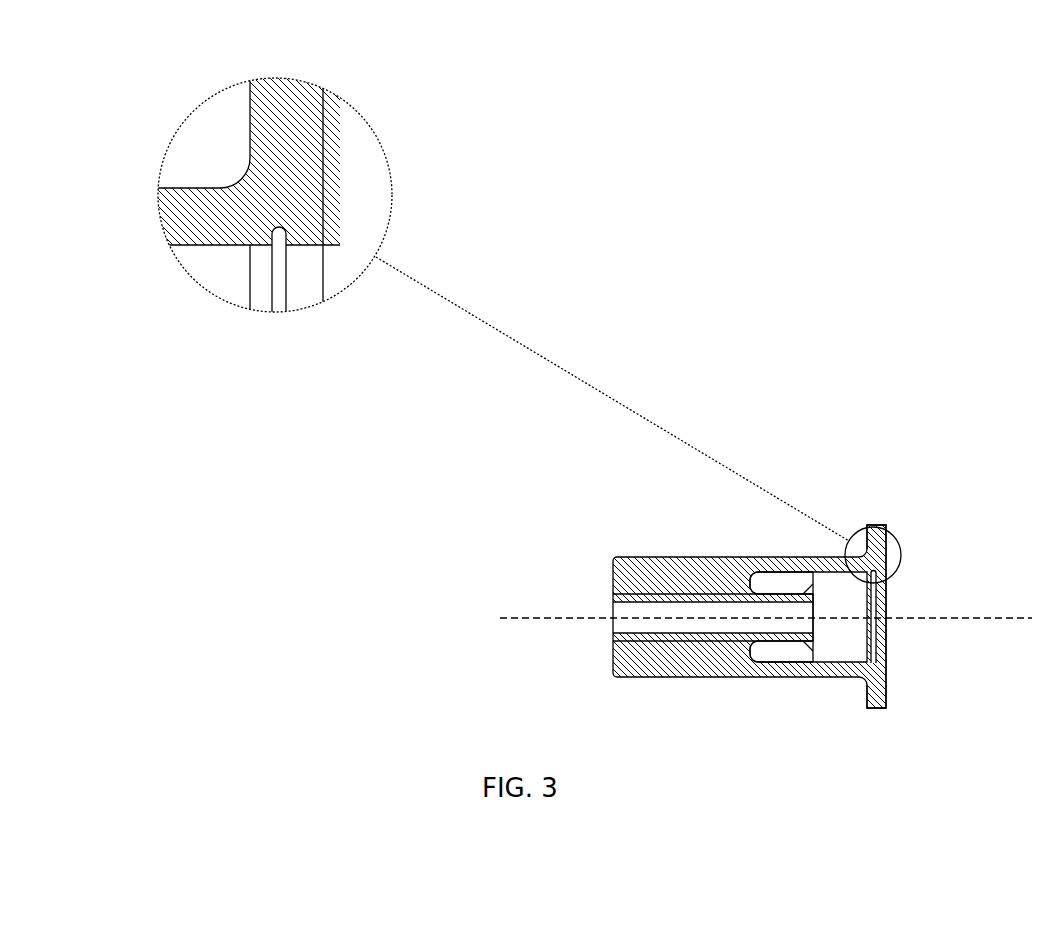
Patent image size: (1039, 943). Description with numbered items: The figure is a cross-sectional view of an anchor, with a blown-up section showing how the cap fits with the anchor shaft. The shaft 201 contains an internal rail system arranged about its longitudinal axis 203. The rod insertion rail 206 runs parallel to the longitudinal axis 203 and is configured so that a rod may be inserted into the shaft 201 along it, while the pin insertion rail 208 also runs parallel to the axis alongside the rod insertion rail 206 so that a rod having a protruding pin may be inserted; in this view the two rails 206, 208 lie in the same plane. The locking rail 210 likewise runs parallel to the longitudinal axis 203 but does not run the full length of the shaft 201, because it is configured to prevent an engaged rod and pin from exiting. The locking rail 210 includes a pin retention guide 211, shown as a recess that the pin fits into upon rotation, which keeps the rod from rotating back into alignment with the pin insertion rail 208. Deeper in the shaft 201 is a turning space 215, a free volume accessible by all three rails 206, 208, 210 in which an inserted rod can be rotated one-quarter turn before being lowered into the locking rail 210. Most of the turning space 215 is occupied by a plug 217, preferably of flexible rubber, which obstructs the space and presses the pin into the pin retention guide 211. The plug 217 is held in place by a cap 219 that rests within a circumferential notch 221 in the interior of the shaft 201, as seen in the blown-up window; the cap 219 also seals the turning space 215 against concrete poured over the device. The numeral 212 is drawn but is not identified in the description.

The shaft 201 is at (640, 557).
The longitudinal axis 203 is at (970, 618).
The rod insertion rail 206 is at (618, 599).
The pin insertion rail 208 is at (615, 620).
The locking rail 210 is at (772, 648).
The pin retention guide 211 is at (752, 645).
The end wall 212 is at (810, 650).
The turning space 215 is at (852, 638).
The plug 217 is at (831, 640).
The cap 219 is at (877, 603).
The circumferential notch 221 is at (863, 553).